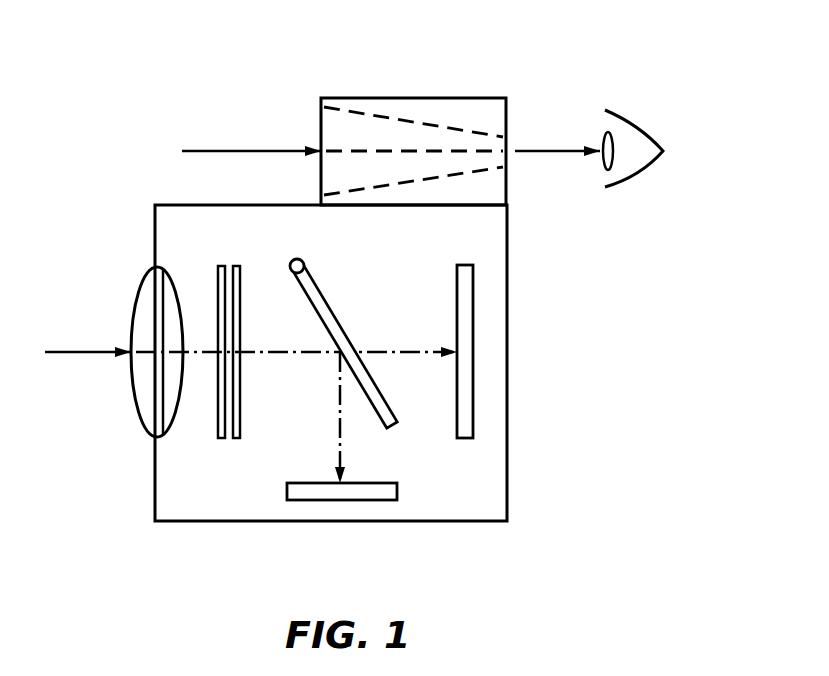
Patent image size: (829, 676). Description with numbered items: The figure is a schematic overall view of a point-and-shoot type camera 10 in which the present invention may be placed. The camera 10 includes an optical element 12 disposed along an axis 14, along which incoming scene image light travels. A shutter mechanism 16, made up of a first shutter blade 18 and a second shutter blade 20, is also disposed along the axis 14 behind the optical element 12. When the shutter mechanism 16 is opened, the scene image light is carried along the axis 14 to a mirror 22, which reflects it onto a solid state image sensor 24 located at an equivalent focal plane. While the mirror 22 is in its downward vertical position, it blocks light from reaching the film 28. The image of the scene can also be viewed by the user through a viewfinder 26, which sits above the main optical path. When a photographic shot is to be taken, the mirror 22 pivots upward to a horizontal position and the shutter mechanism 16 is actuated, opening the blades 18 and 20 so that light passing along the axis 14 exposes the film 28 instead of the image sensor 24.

The camera 10 is at (575, 92).
The optical element 12 is at (133, 300).
The axis 14 is at (90, 352).
The shutter mechanism 16 is at (252, 445).
The first shutter blade 18 is at (220, 265).
The second shutter blade 20 is at (237, 265).
The mirror 22 is at (345, 328).
The solid state image sensor 24 is at (397, 490).
The viewfinder 26 is at (437, 108).
The film 28 is at (465, 438).